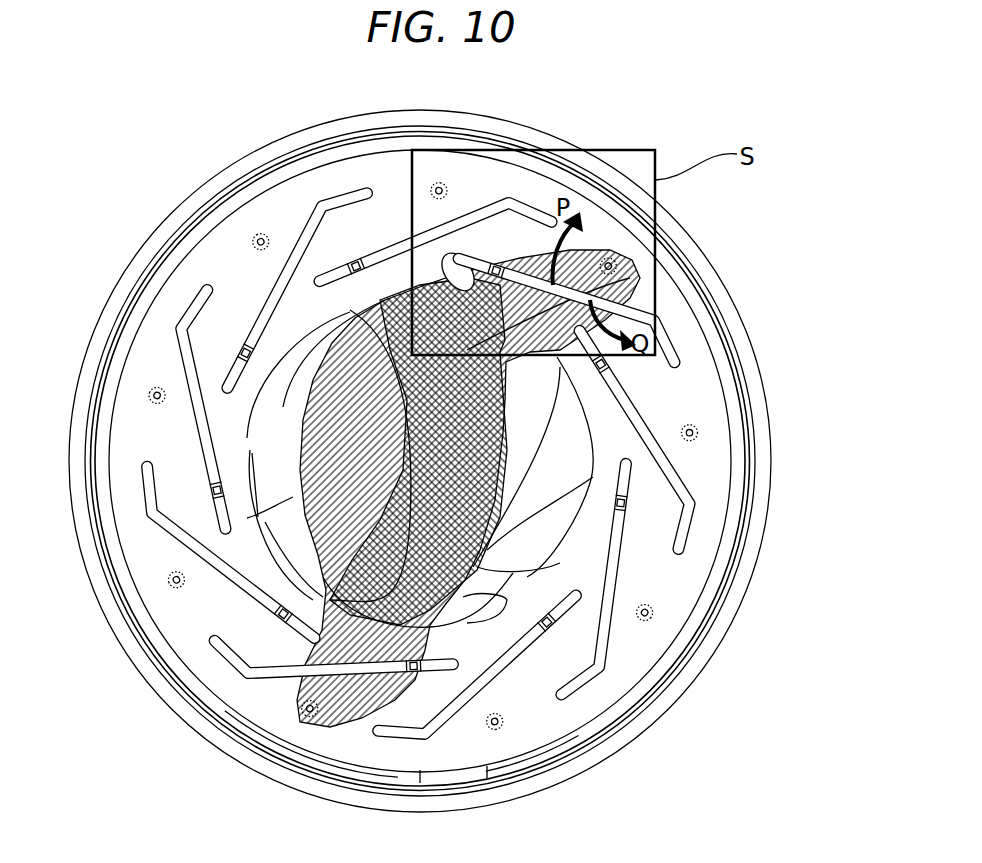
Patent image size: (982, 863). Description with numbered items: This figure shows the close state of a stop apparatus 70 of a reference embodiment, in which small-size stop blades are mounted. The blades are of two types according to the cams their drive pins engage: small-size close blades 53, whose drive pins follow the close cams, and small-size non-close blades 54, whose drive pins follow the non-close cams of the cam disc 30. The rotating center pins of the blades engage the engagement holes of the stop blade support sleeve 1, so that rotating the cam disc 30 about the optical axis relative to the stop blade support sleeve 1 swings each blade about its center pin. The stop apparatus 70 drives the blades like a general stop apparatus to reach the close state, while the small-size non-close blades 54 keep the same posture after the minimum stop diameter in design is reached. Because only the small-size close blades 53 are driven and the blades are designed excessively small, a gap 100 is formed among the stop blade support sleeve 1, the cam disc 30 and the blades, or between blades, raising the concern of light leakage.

The stop blade support sleeve 1 is at (764, 432).
The cam disc 30 is at (283, 210).
The small-size close blades 53 is at (237, 268).
The small-size non-close blades 54 is at (397, 203).
The stop apparatus 70 is at (755, 272).
The gap 100 is at (438, 292).